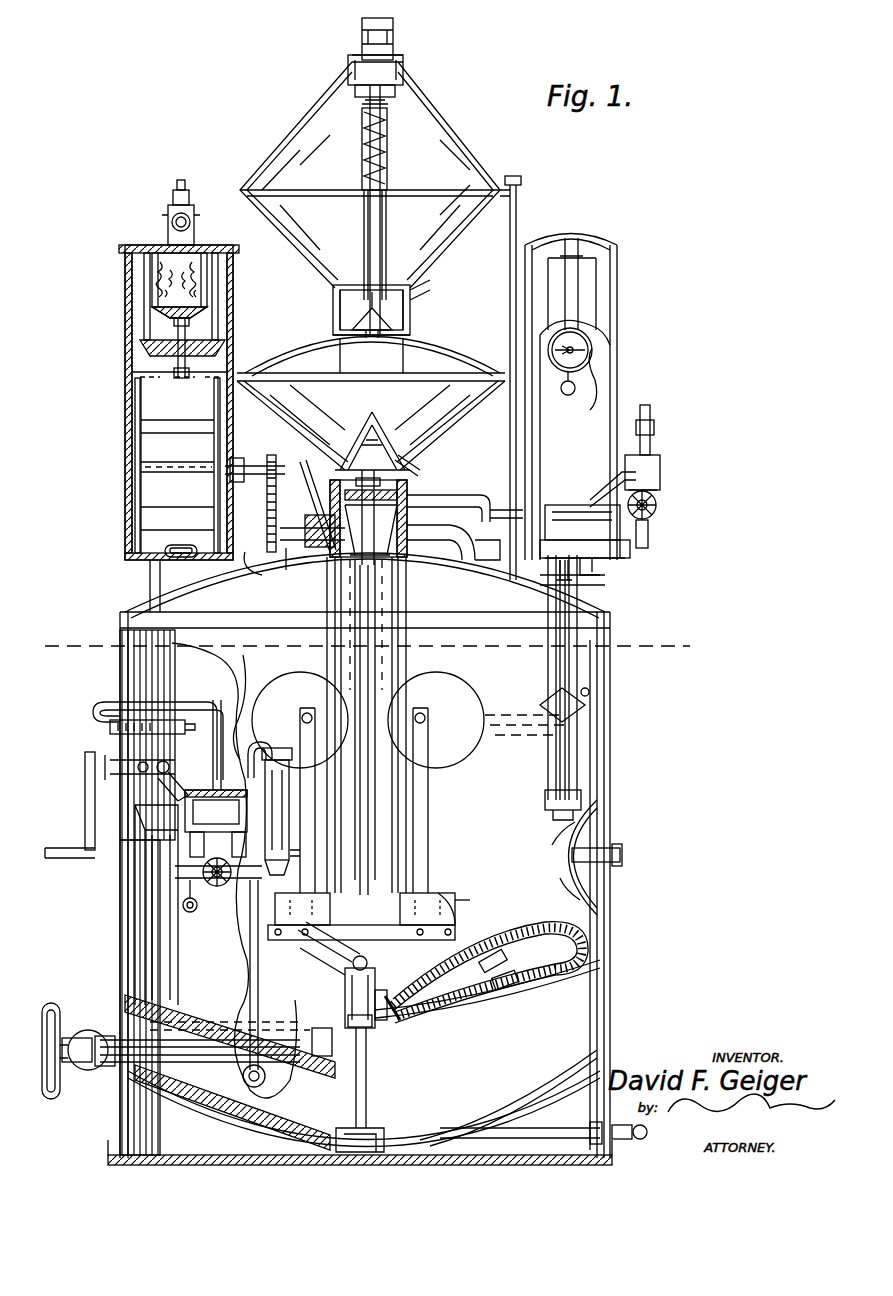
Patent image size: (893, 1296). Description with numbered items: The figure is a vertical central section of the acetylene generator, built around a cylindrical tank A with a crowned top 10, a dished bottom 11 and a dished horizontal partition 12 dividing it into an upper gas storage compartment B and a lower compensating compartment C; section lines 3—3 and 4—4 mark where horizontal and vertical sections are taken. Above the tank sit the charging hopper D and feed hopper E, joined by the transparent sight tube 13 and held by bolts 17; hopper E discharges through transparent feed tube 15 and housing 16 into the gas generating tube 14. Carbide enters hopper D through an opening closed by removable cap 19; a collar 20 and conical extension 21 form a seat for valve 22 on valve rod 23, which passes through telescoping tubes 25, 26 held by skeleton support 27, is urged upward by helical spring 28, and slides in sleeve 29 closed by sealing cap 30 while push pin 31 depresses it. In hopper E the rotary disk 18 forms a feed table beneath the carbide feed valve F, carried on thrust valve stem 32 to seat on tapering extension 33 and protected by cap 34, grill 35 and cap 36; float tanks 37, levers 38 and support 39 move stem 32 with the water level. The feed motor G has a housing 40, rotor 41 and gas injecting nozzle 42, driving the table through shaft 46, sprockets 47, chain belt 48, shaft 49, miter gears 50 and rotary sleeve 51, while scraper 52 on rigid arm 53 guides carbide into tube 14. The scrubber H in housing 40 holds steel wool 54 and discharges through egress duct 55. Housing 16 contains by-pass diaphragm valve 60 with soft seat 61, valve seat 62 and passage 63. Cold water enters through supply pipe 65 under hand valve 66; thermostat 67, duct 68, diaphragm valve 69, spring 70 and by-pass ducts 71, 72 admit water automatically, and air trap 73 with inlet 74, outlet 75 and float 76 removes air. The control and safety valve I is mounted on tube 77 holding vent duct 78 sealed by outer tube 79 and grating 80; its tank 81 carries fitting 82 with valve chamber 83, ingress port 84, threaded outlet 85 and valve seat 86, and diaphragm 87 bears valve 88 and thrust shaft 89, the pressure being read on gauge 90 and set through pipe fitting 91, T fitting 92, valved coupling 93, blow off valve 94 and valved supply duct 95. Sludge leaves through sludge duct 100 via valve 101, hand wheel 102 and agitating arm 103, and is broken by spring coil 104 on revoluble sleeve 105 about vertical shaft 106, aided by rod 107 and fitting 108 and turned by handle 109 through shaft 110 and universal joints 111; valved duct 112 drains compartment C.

The cylindrical tank A is at (608, 940).
The upper compartment B is at (495, 910).
The lower compartment C is at (487, 1012).
The charging hopper D is at (455, 160).
The feed hopper E is at (440, 362).
The carbide feed valve F is at (407, 485).
The feed motor G is at (130, 425).
The gas dryer or scrubber H is at (152, 300).
The combined control and safety valve I is at (588, 240).
The section line 3— 3 is at (367, 647).
The section line 4— 4 is at (181, 175).
The crowned top 10 is at (602, 617).
The dished bottom 11 is at (540, 1102).
The dished horizontal partition 12 is at (245, 1130).
The transparent sight tube 13 is at (412, 300).
The gas generating tube 14 is at (429, 840).
The transparent feed tube 15 is at (425, 525).
The valve housing 16 is at (407, 575).
The bolts 17 is at (518, 188).
The rotary disk 18 is at (425, 495).
The removable cap 19 is at (362, 58).
The collar 20 is at (333, 290).
The conical extension 21 is at (392, 325).
The valve 22 is at (345, 312).
The valve rod 23 is at (383, 195).
The telescoping tube 25 is at (366, 195).
The telescoping tube 26 is at (362, 140).
The skeleton support 27 is at (370, 290).
The helical expansion spring 28 is at (388, 135).
The cylindrical sleeve 29 is at (400, 90).
The sealing cap 30 is at (393, 32).
The push pin 31 is at (348, 70).
The thrust valve stem 32 is at (407, 808).
The downwardly tapering extension 33 is at (400, 450).
The upwardly tapering cap 34 is at (365, 440).
The grill 35 is at (355, 450).
The cap 36 is at (372, 414).
The float tanks 37 is at (460, 742).
The levers 38 is at (440, 925).
The support 39 is at (452, 905).
The motor housing 40 is at (132, 352).
The rotor 41 is at (135, 468).
The gas injecting nozzle 42 is at (165, 548).
The rotor shaft 46 is at (140, 490).
The sprockets 47 is at (260, 562).
The chain belt 48 is at (266, 500).
The shaft 49 is at (286, 560).
The miter gears 50 is at (318, 548).
The rotary sleeve 51 is at (360, 600).
The scraper 52 is at (300, 462).
The rigid arm 53 is at (335, 500).
The steel wool 54 is at (160, 278).
The main egress duct 55 is at (190, 215).
The by-pass diaphragm valve 60 is at (560, 505).
The soft composition seat 61 is at (570, 508).
The valve seat 62 is at (445, 548).
The passage 63 is at (478, 562).
The supply pipe 65 is at (185, 870).
The hand valve 66 is at (217, 888).
The liquid control thermostat 67 is at (110, 728).
The duct 68 is at (120, 702).
The diaphragm controlled valve 69 is at (224, 780).
The spring 70 is at (222, 834).
The by-pass duct 71 is at (160, 822).
The by-pass duct 72 is at (376, 796).
The air trap 73 is at (300, 852).
The inlet connection 74 is at (250, 930).
The outlet 75 is at (268, 745).
The air tight float 76 is at (290, 792).
The tube 77 is at (578, 580).
The vent duct 78 is at (600, 798).
The outer tube 79 is at (578, 690).
The grating 80 is at (586, 708).
The small tank 81 is at (613, 258).
The fitting 82 is at (600, 566).
The valve chamber 83 is at (590, 565).
The ingress port 84 is at (558, 600).
The threaded outlet 85 is at (631, 545).
The valve seat 86 is at (627, 552).
The diaphragm 87 is at (658, 470).
The valve 88 is at (650, 525).
The thrust shaft 89 is at (579, 292).
The gauge 90 is at (592, 345).
The pipe fitting 91 is at (652, 440).
The T fitting 92 is at (660, 483).
The valved coupling 93 is at (657, 505).
The blow off valve 94 is at (628, 470).
The valved supply duct 95 is at (183, 912).
The sludge duct 100 is at (320, 1030).
The valve 101 is at (90, 1030).
The hand wheel 102 is at (50, 1098).
The agitating arm 103 is at (352, 1128).
The spring coil 104 is at (515, 950).
The revoluble sleeve 105 is at (388, 1008).
The vertical shaft 106 is at (368, 1100).
The rod 107 is at (478, 990).
The fitting 108 is at (512, 990).
The handle 109 is at (88, 812).
The shaft 110 is at (345, 975).
The universal joints 111 is at (202, 712).
The valved duct 112 is at (482, 1128).